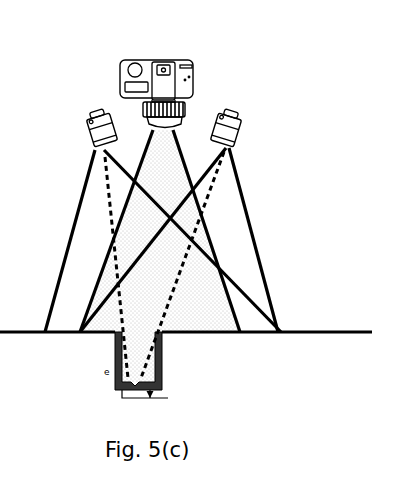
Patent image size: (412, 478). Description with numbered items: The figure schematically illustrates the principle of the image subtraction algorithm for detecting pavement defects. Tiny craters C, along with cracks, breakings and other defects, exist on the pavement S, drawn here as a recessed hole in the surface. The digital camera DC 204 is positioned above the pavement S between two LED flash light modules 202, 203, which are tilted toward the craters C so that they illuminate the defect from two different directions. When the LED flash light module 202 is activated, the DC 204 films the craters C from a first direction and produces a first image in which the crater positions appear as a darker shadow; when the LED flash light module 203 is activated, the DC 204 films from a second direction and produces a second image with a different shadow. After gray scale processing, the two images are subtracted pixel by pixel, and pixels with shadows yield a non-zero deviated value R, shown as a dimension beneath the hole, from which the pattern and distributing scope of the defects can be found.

The LED flash light module 202 is at (80, 119).
The LED flash light module 203 is at (238, 123).
The DC 204 is at (117, 68).
The craters C is at (133, 347).
The pavement S is at (286, 332).
The deviated value R is at (152, 402).